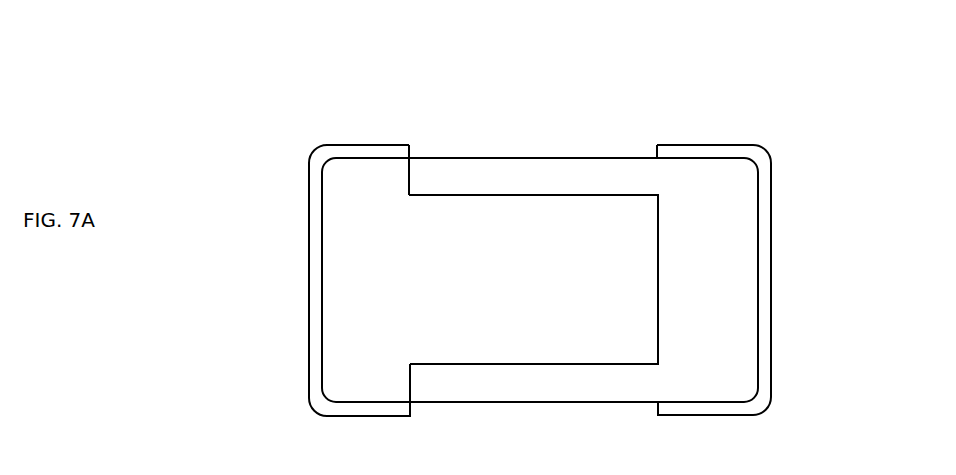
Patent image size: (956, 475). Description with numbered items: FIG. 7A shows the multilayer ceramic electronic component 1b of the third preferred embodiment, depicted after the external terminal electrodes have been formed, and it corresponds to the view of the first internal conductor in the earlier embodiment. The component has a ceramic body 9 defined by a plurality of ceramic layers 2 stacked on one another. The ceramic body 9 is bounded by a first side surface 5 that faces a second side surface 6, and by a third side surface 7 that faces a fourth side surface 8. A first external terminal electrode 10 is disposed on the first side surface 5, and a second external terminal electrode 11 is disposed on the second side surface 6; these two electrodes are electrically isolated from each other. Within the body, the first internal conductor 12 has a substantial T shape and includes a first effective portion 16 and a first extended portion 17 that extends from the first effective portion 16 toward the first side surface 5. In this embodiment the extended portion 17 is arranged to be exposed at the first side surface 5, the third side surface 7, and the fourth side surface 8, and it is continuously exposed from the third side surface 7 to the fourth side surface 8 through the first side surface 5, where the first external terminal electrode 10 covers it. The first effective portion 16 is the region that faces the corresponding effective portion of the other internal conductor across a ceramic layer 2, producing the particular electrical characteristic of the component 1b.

The multilayer ceramic electronic component 1b is at (208, 145).
The ceramic layer 2 is at (714, 212).
The first side surface 5 is at (322, 336).
The second side surface 6 is at (758, 250).
The third side surface 7 is at (485, 403).
The fourth side surface 8 is at (588, 157).
The ceramic body 9 is at (634, 148).
The first external terminal electrode 10 is at (310, 223).
The second external terminal electrode 11 is at (771, 305).
The first internal conductor 12 is at (477, 80).
The first effective portion 16 is at (466, 205).
The first extended portion 17 is at (357, 183).